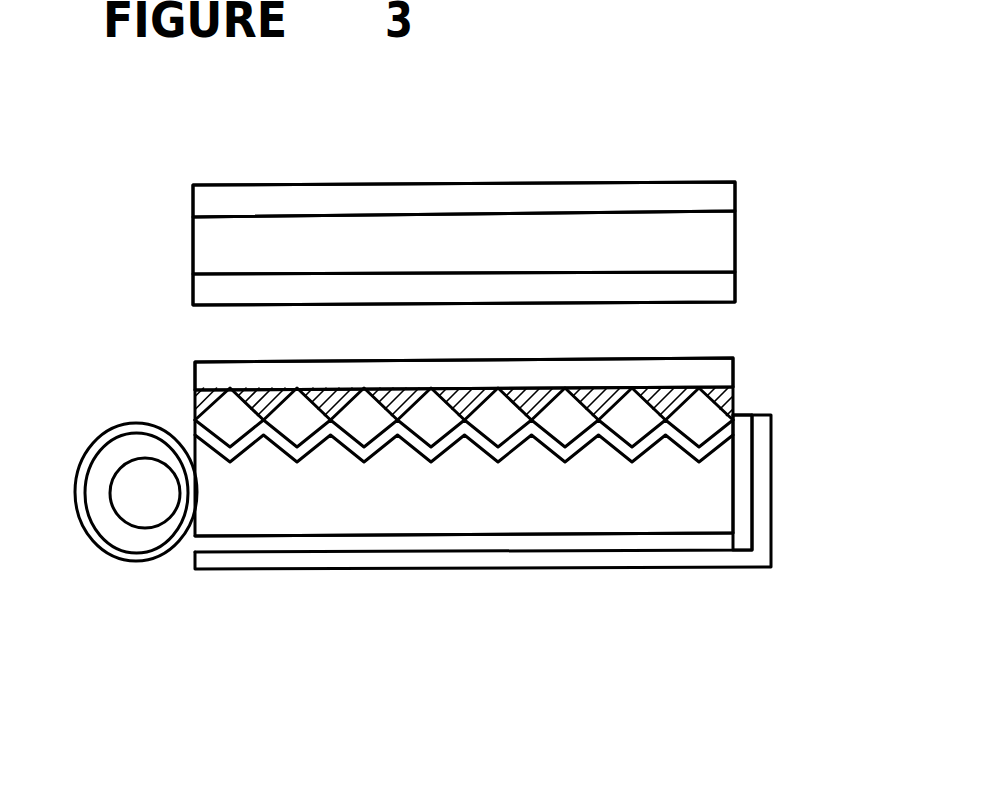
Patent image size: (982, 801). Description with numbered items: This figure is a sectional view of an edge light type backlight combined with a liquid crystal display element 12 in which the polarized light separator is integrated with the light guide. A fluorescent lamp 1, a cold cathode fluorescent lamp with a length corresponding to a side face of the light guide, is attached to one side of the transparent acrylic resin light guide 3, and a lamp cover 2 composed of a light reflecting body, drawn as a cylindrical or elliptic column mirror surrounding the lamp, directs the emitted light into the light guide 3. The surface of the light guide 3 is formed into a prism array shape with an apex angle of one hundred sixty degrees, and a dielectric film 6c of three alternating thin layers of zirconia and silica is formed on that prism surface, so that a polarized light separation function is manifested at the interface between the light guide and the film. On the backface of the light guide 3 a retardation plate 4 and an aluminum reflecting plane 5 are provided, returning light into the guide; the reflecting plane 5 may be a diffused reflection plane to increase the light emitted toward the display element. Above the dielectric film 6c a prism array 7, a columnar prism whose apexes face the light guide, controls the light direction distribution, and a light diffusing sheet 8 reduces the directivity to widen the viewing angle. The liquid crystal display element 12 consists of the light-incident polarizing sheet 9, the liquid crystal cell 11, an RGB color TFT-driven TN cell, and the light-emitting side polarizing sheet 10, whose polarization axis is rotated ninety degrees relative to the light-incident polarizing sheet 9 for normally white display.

The fluorescent lamp 1 is at (128, 488).
The lamp cover 2 is at (113, 549).
The light guide 3 is at (712, 493).
The retardation plate 4 is at (698, 542).
The reflecting plane 5 is at (307, 558).
The dielectric film 6c is at (718, 437).
The prism array 7 is at (727, 398).
The light diffusing sheet 8 is at (722, 372).
The light-incident polarizing sheet 9 is at (727, 285).
The light-emitting side polarizing sheet 10 is at (725, 197).
The liquid crystal cell 11 is at (718, 242).
The liquid crystal display element 12 is at (446, 233).